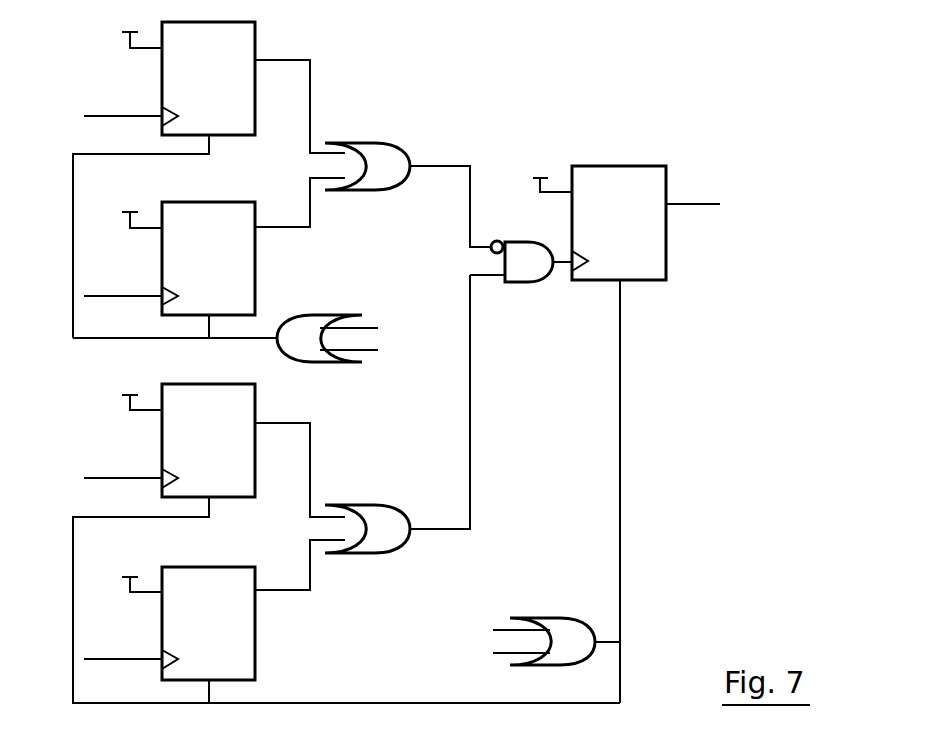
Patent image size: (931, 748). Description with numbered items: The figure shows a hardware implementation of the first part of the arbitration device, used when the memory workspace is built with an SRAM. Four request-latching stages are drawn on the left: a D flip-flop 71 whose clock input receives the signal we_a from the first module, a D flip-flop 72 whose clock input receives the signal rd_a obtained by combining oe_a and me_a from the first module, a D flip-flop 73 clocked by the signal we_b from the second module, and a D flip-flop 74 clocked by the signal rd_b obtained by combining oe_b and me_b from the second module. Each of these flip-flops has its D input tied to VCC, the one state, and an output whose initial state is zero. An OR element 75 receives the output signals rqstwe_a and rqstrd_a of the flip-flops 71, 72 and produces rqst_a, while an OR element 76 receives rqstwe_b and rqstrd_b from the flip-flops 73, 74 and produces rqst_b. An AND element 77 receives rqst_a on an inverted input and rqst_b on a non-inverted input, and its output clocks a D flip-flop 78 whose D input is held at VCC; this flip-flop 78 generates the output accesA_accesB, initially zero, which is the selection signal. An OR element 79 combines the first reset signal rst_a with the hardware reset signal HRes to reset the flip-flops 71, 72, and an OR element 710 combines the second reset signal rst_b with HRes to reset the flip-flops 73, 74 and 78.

The D flip-flop 71 is at (244, 100).
The D flip-flop 72 is at (218, 210).
The D flip-flop 73 is at (249, 442).
The D flip-flop 74 is at (218, 565).
The OR element 75 is at (372, 143).
The OR element 76 is at (372, 505).
The AND element 77 is at (516, 283).
The D flip-flop 78 is at (655, 282).
The OR element 79 is at (320, 316).
The OR element 710 is at (553, 618).